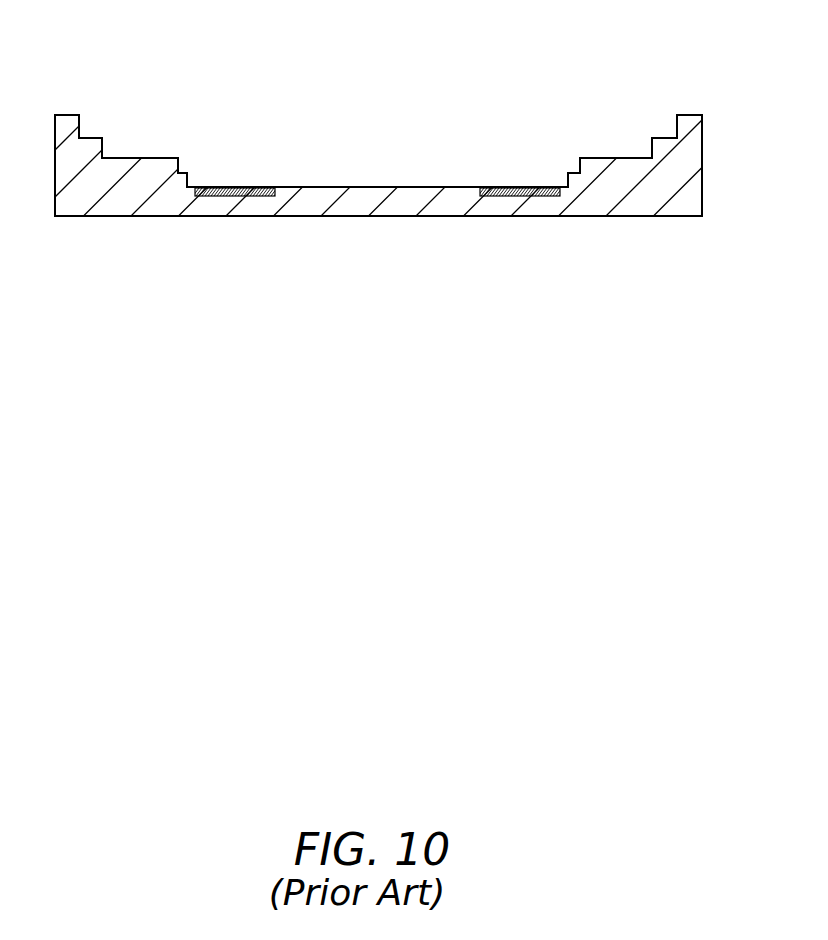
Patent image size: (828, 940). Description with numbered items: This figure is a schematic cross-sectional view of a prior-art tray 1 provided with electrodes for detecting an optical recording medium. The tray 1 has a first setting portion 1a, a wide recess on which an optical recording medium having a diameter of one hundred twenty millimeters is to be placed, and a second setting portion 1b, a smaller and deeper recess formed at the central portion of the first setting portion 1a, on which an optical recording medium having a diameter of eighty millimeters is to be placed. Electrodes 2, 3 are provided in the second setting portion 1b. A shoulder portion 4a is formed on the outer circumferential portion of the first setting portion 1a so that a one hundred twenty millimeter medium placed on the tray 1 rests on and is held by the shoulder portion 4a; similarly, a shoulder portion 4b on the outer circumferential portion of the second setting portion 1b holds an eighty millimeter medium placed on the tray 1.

The tray 1 is at (637, 212).
The first setting portion 1a is at (80, 108).
The second setting portion 1b is at (178, 153).
The electrode 2 is at (250, 187).
The electrode 3 is at (493, 188).
The shoulder portion 4a is at (101, 138).
The shoulder portion 4b is at (185, 168).